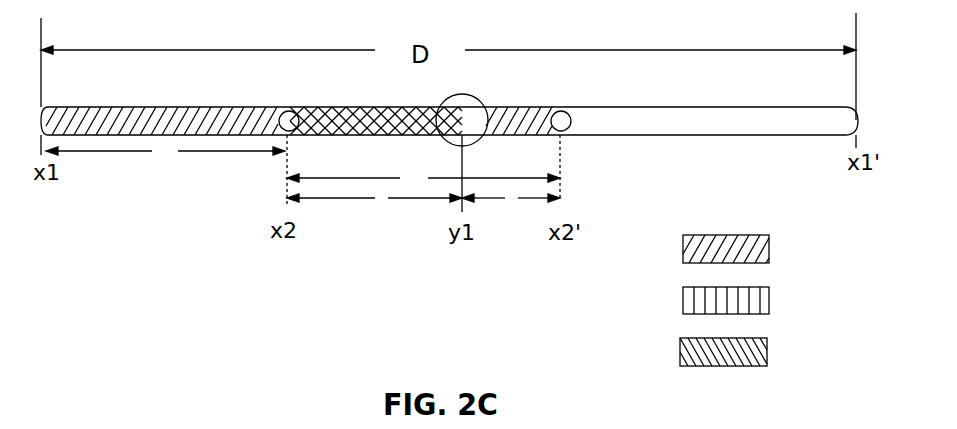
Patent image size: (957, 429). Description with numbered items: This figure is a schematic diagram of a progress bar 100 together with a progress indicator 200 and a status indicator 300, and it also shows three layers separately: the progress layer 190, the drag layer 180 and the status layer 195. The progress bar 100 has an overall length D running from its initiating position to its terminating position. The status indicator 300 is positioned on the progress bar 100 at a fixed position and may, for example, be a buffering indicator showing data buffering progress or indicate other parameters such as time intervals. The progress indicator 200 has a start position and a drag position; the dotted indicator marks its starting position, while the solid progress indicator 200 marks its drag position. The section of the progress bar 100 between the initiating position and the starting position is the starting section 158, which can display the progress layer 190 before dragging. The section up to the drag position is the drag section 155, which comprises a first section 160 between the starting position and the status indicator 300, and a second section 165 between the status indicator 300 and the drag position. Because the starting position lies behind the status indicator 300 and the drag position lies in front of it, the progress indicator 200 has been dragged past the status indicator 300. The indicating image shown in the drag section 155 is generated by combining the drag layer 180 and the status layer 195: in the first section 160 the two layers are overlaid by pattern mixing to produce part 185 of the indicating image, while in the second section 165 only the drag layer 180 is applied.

The progress bar 100 is at (615, 107).
The drag section 155 is at (417, 175).
The starting section 158 is at (165, 150).
The first section 160 is at (376, 197).
The second section 165 is at (517, 197).
The drag layer 180 is at (143, 123).
The part of the indicating image 185 is at (358, 118).
The progress layer 190 is at (688, 300).
The status layer 195 is at (688, 354).
The progress indicator 200 is at (562, 113).
The status indicator 300 is at (452, 102).